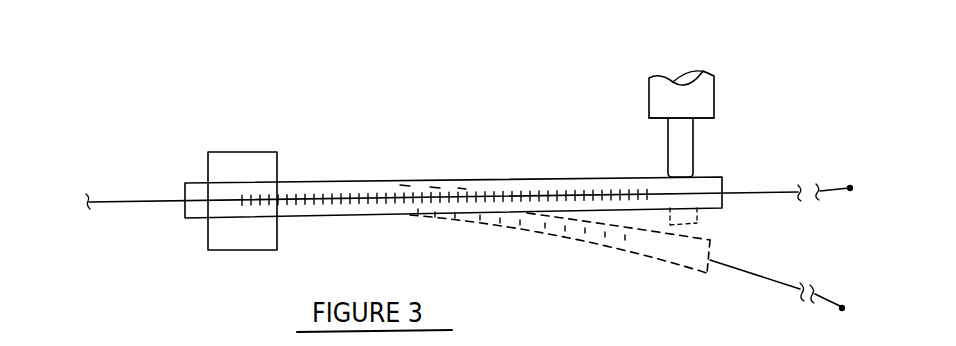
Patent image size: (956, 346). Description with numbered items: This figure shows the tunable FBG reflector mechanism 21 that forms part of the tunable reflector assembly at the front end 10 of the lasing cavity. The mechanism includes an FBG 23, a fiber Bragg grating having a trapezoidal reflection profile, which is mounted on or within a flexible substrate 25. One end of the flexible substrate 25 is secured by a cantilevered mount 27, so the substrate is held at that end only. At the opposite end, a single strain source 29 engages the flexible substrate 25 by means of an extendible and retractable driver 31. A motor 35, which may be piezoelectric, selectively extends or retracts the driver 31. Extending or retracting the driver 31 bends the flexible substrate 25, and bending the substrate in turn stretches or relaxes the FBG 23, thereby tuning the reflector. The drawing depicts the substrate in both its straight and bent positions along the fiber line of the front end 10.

The tunable FBG reflector mechanism 21 is at (160, 106).
The FBG 23 is at (345, 197).
The flexible substrate 25 is at (562, 178).
The cantilevered mount 27 is at (254, 179).
The strain source 29 is at (646, 102).
The driver 31 is at (689, 145).
The motor 35 is at (705, 93).
The front end 10 is at (832, 183).